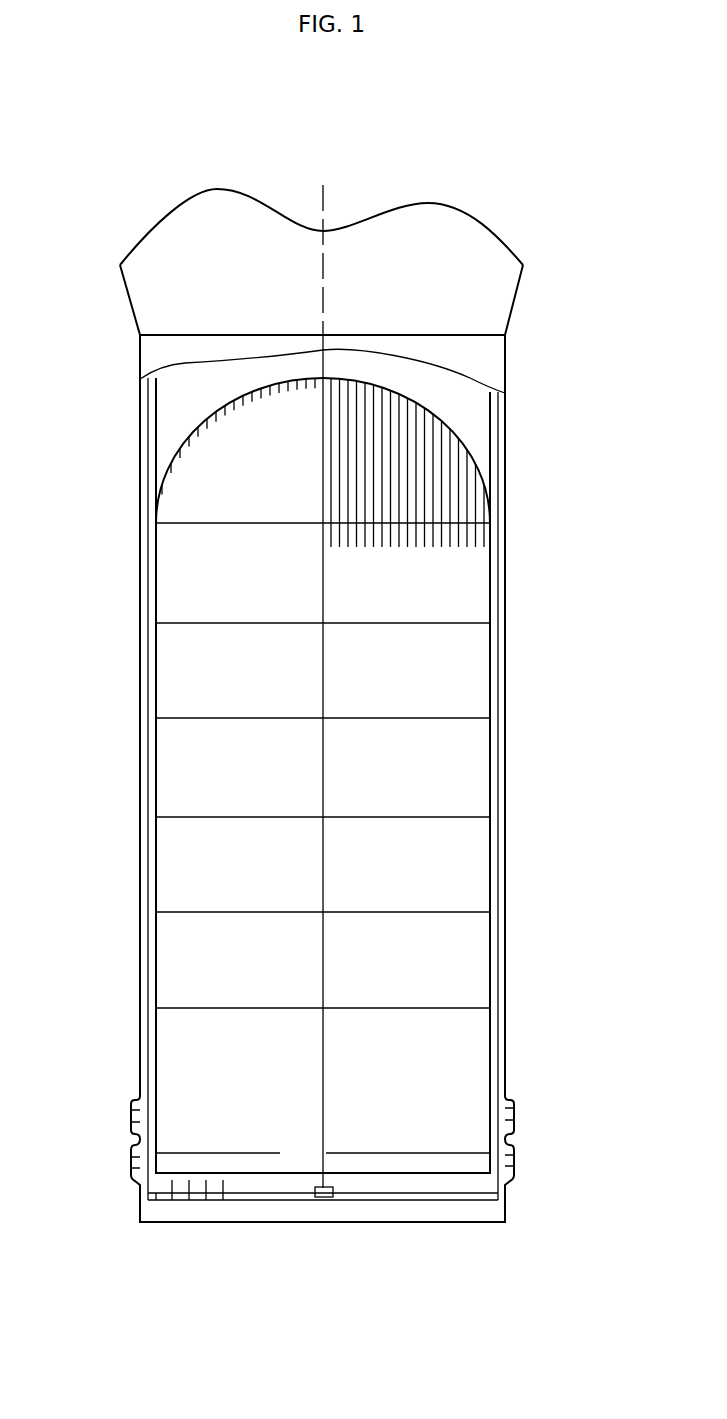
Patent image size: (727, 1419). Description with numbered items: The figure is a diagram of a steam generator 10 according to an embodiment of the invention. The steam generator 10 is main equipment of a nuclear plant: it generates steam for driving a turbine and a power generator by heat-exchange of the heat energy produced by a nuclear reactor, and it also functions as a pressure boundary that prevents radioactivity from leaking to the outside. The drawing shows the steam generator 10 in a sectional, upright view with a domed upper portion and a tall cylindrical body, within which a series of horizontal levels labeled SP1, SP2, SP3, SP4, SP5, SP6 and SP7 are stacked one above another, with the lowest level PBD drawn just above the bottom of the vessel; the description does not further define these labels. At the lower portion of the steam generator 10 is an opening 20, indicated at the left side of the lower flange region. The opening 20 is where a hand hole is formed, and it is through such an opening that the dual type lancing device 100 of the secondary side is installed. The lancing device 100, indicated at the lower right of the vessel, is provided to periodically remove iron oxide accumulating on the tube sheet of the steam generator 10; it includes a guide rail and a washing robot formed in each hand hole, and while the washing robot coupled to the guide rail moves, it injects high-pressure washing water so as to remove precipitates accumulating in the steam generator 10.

The steam generator 10 is at (334, 128).
The opening 20 is at (125, 1137).
The dual type lancing device 100 is at (548, 1070).
The support plate 1 SP1 is at (359, 1104).
The support plate 2 SP2 is at (359, 1006).
The support plate 3 SP3 is at (359, 911).
The support plate 4 SP4 is at (359, 814).
The support plate 5 SP5 is at (359, 716).
The support plate 6 SP6 is at (359, 621).
The support plate 7 SP7 is at (359, 521).
The bottom plate PBD is at (362, 1151).